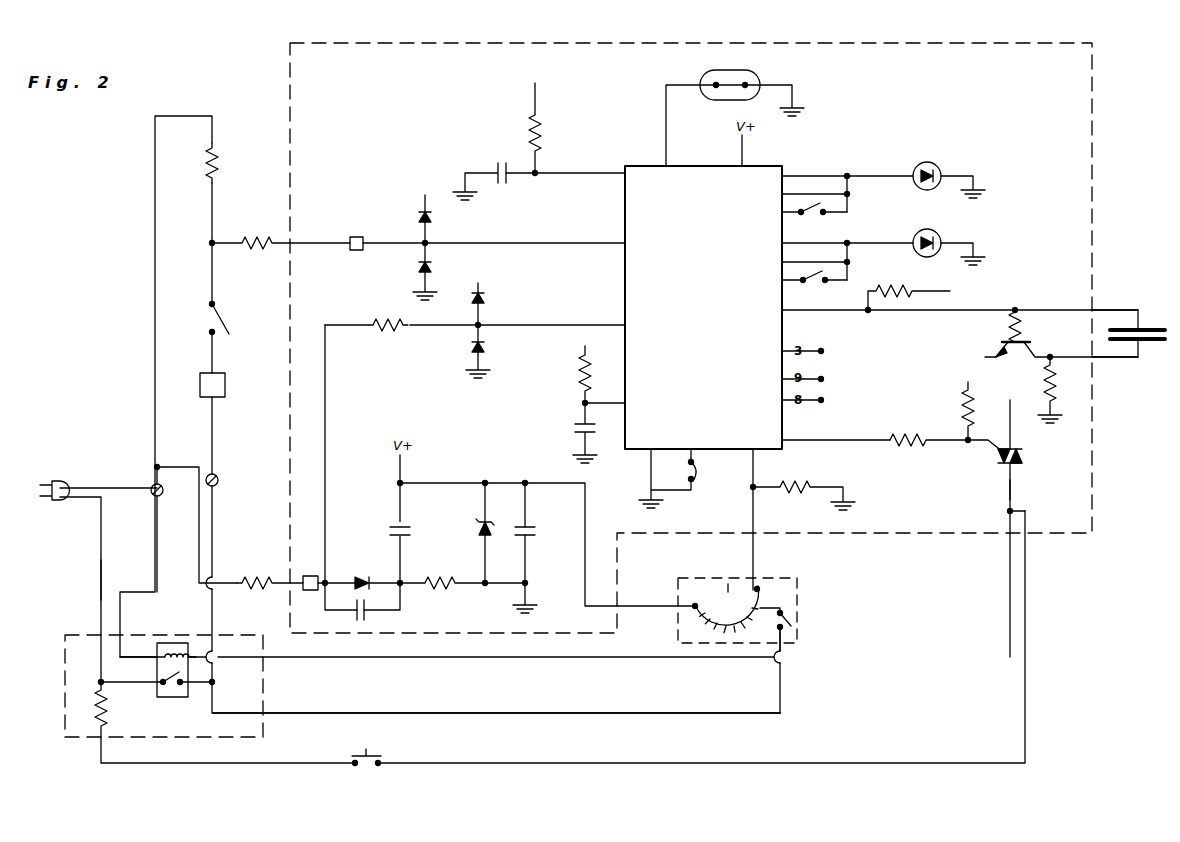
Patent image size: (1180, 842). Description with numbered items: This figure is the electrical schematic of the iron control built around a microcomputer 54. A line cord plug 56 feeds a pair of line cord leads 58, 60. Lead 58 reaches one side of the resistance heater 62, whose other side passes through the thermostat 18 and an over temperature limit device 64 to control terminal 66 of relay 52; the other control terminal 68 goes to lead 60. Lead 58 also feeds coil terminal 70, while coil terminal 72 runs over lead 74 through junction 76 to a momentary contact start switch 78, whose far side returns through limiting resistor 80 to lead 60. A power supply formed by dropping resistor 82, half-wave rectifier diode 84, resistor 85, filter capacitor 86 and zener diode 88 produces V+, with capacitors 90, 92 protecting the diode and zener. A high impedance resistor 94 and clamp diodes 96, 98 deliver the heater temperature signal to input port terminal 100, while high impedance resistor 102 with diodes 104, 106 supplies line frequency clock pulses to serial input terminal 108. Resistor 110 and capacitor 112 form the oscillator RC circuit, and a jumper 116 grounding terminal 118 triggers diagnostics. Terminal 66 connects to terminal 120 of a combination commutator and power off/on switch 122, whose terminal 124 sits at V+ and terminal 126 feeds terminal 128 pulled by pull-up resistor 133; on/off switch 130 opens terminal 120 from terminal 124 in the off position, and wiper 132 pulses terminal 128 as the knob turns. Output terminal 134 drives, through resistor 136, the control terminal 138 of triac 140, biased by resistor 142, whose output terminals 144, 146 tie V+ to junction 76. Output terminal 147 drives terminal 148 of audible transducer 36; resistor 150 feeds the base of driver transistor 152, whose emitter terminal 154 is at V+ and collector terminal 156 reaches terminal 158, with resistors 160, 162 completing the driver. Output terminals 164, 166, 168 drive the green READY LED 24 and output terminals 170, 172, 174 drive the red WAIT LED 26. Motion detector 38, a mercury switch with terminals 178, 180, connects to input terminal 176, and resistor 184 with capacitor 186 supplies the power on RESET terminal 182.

The thermostat 18 is at (226, 320).
The READY LED 24 is at (915, 235).
The WAIT LED 26 is at (930, 162).
The audible transducer 36 is at (1150, 346).
The motion detector 38 is at (760, 77).
The relay 52 is at (160, 704).
The microcomputer 54 is at (622, 212).
The line cord plug 56 is at (57, 479).
The line cord lead 58 is at (120, 487).
The line cord lead 60 is at (104, 562).
The resistance heater 62 is at (222, 166).
The over temperature limit device 64 is at (228, 388).
The control terminal 66 is at (204, 687).
The control terminal 68 is at (142, 686).
The terminal of the operating coil 70 is at (140, 656).
The terminal of the coil 72 is at (199, 655).
The lead 74 is at (531, 714).
The junction 76 is at (1001, 560).
The momentary contact start switch 78 is at (374, 768).
The limiting resistor 80 is at (98, 722).
The dropping resistor 82 is at (250, 580).
The diode 84 is at (362, 579).
The resistor 85 is at (444, 580).
The filter capacitor 86 is at (394, 528).
The zener diode 88 is at (478, 528).
The capacitor 90 is at (366, 618).
The capacitor 92 is at (538, 528).
The high impedance resistor 94 is at (255, 238).
The diode 96 is at (418, 218).
The diode 98 is at (418, 269).
The input port terminal 100 is at (509, 243).
The high impedance resistor 102 is at (394, 330).
The diode 104 is at (486, 299).
The diode 106 is at (486, 349).
The serial input terminal 108 is at (539, 325).
The resistor 110 is at (578, 376).
The capacitor 112 is at (575, 426).
The jumper 116 is at (700, 480).
The terminal 118 is at (692, 448).
The terminal 120 is at (800, 641).
The combination commutator and power off/on switch 122 is at (800, 589).
The terminal 124 is at (690, 604).
The terminal 126 is at (759, 588).
The terminal 128 is at (749, 447).
The on/off switch 130 is at (789, 621).
The wiper 132 is at (726, 586).
The pull-up resistor 133 is at (820, 484).
The output terminal 134 is at (781, 438).
The resistor 136 is at (901, 452).
The control terminal 138 is at (983, 443).
The triac 140 is at (1023, 452).
The resistor 142 is at (962, 397).
The output terminal 144 is at (628, 403).
The output terminal 146 is at (1013, 489).
The output terminal 147 is at (782, 310).
The terminal 148 is at (1100, 309).
The resistor 150 is at (1022, 319).
The driver transistor 152 is at (992, 338).
The emitter terminal 154 is at (1002, 353).
The collector terminal 156 is at (1034, 355).
The terminal 158 is at (1110, 366).
The resistor 160 is at (1055, 394).
The resistor 162 is at (910, 301).
The output terminal 164 is at (782, 243).
The output terminal 166 is at (782, 262).
The output terminal 168 is at (782, 280).
The output terminal 170 is at (782, 176).
The output terminal 172 is at (782, 194).
The output terminal 174 is at (782, 212).
The input terminal 176 is at (667, 175).
The terminal 178 is at (703, 92).
The terminal 180 is at (758, 100).
The power on RESET terminal 182 is at (630, 175).
The resistor 184 is at (545, 137).
The capacitor 186 is at (496, 165).